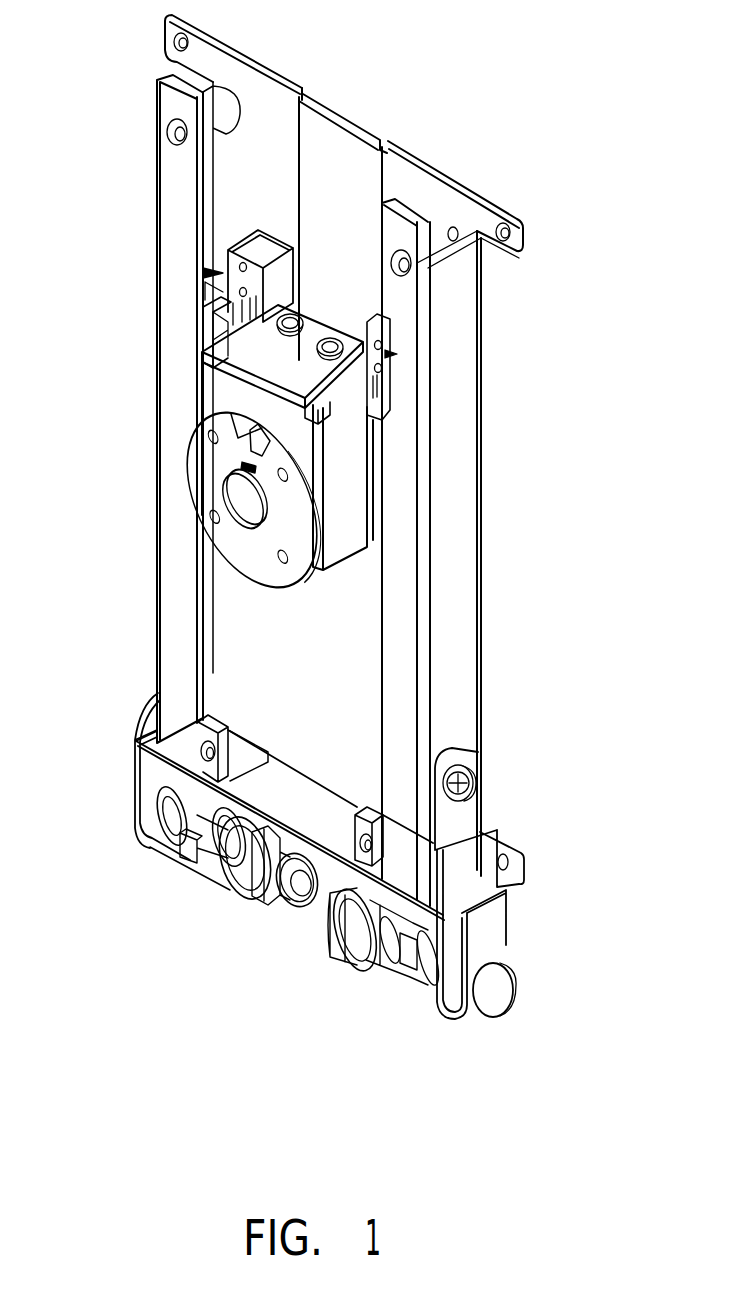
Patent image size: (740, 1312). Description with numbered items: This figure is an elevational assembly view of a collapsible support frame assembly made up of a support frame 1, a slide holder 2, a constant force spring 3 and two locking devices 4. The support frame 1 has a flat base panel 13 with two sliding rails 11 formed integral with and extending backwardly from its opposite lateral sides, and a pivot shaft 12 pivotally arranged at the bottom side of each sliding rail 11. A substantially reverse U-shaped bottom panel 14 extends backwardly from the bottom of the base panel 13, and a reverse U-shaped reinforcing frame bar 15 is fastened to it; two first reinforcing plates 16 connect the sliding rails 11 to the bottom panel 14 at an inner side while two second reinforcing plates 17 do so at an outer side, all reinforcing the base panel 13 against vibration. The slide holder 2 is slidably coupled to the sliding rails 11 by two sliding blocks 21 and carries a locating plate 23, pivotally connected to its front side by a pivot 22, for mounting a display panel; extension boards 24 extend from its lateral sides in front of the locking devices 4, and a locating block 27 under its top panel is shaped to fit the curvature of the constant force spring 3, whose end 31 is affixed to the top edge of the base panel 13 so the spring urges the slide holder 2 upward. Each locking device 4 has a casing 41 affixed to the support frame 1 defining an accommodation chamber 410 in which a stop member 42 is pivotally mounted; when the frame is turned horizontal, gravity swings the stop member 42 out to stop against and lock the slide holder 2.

The support frame 1 is at (482, 578).
The slide holder 2 is at (213, 400).
The constant force spring 3 is at (348, 188).
The locking device 4 is at (205, 273).
The sliding rails 11 is at (226, 170).
The pivot shafts 12 is at (213, 843).
The base panel 13 is at (268, 114).
The reverse U-shaped bottom panel 14 is at (303, 808).
The reverse U-shaped reinforcing frame bar 15 is at (330, 870).
The first reinforcing plates 16 is at (203, 730).
The second reinforcing plates 17 is at (153, 707).
The sliding blocks 21 is at (210, 290).
The pivot 22 is at (243, 500).
The locating plate 23 is at (200, 477).
The extension boards 24 is at (210, 305).
The locating block 27 is at (360, 403).
The end 31 is at (340, 123).
The casing 41 is at (250, 247).
The stop member 42 is at (227, 318).
The accommodation chamber 410 is at (215, 314).